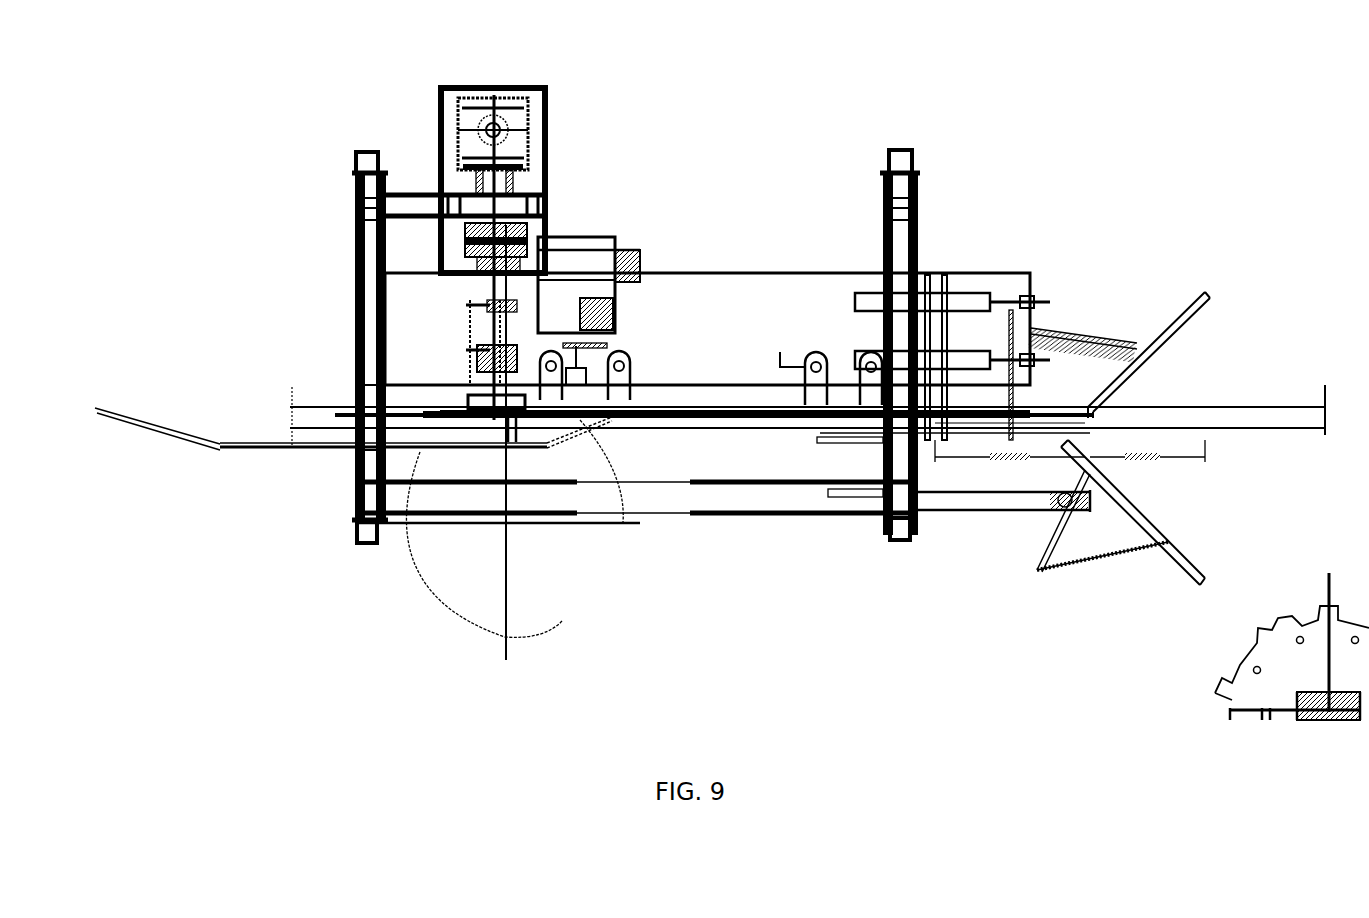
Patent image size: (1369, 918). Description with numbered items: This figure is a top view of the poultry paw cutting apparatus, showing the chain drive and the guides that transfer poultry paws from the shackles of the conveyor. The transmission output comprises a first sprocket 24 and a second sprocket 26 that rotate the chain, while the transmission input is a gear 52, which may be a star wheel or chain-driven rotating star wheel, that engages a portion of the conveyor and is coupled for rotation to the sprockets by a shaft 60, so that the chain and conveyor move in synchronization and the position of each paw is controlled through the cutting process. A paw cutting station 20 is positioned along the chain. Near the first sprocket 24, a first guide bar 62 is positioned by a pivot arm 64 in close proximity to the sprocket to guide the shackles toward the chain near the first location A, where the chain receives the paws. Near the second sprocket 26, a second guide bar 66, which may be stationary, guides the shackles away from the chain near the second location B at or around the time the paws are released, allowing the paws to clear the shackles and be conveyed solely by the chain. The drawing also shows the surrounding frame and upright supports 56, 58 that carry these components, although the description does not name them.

The left vertical post 56 is at (356, 158).
The frame 58 is at (787, 268).
The paw cutting station 20 is at (600, 265).
The shaft 60 is at (490, 315).
The second sprocket 26 is at (432, 398).
The second location B is at (488, 428).
The second guide bar 66 is at (432, 452).
The pivot arm 64 is at (960, 512).
The first location A is at (982, 424).
The first guide bar 62 is at (1187, 568).
The first sprocket 24 is at (1048, 405).
The gear 52 is at (1250, 700).